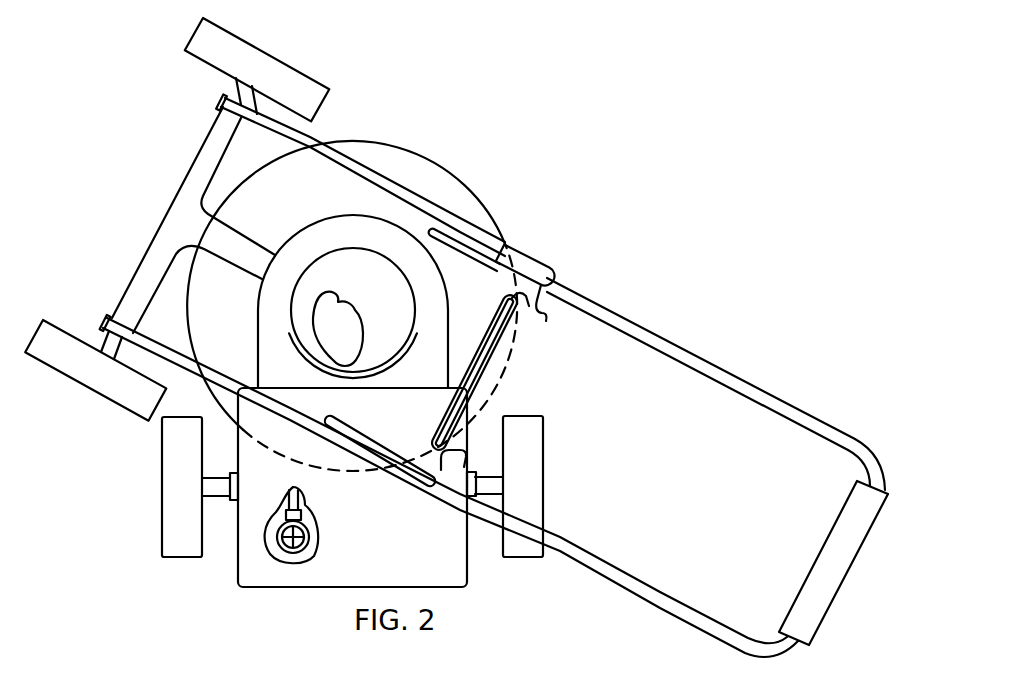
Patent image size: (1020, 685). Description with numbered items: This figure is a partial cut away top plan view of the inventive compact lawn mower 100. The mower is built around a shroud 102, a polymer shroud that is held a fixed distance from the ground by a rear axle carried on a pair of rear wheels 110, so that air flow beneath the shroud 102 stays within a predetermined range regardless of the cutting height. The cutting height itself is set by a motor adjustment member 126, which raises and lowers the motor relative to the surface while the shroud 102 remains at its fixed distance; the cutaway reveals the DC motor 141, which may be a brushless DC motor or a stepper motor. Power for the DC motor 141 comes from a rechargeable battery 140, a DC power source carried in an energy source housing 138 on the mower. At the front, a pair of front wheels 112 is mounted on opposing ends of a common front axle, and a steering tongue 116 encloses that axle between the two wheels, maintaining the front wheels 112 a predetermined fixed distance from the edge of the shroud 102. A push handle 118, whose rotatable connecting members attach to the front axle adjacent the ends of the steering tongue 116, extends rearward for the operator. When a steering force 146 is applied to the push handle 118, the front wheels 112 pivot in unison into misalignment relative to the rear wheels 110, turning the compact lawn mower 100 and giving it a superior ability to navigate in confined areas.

The compact lawn mower 100 is at (520, 108).
The shroud 102 is at (393, 168).
The rear wheels 110 is at (176, 500).
The front wheels 112 is at (207, 52).
The steering tongue 116 is at (177, 235).
The push handle 118 is at (648, 332).
The motor adjustment member 126 is at (363, 307).
The energy source housing 138 is at (440, 557).
The rechargeable battery 140 is at (291, 558).
The DC motor 141 is at (318, 333).
The steering force 146 is at (829, 643).